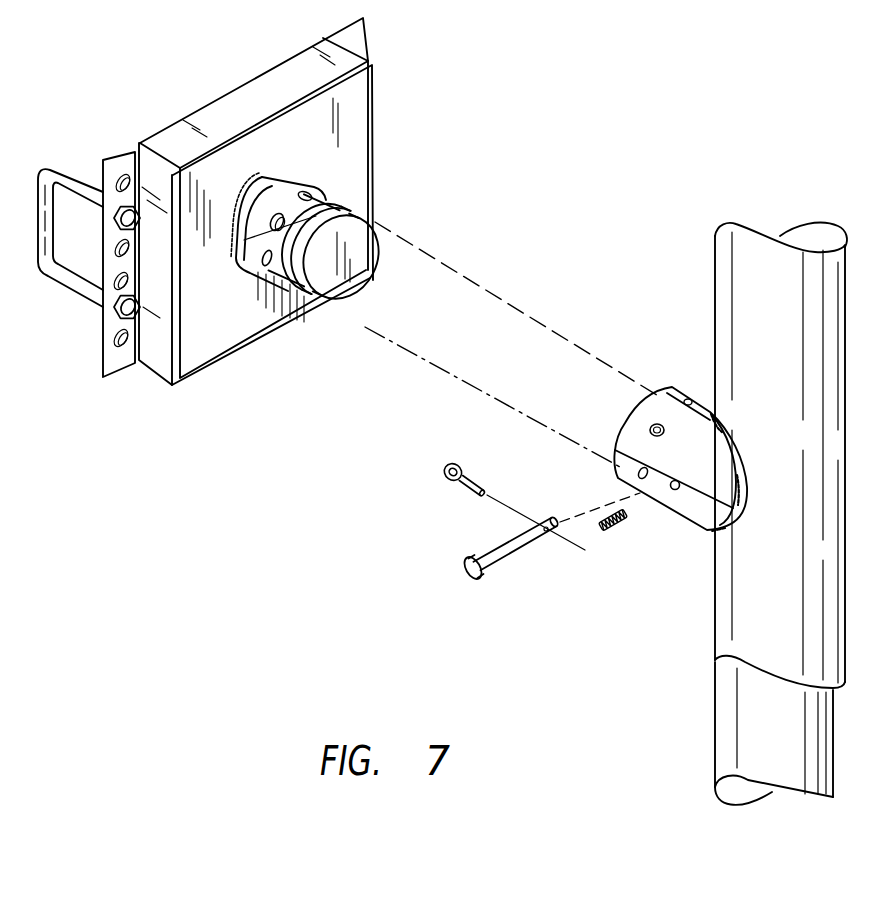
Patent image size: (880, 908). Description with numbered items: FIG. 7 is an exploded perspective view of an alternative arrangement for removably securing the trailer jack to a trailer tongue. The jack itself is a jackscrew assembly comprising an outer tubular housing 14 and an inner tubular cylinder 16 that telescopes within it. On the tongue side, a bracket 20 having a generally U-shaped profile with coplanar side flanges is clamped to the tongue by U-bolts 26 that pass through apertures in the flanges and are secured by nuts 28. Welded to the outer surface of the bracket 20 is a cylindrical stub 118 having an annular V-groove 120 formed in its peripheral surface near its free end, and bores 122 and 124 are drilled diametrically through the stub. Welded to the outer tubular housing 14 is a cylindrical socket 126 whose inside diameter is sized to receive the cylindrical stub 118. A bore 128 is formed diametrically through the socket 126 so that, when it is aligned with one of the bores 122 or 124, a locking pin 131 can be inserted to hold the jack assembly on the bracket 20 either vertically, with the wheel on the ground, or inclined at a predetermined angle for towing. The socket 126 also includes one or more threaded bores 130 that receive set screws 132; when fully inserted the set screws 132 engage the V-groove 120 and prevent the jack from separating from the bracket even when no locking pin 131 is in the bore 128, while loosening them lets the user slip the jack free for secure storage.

The outer tubular housing 14 is at (714, 258).
The inner tubular cylinder 16 is at (725, 714).
The bracket 20 is at (236, 86).
The U-bolt 26 is at (57, 168).
The nut 28 is at (115, 313).
The cylindrical stub 118 is at (307, 185).
The annular V-groove 120 is at (338, 207).
The bore 122 is at (246, 257).
The bore 124 is at (270, 256).
The cylindrical socket 126 is at (648, 405).
The bore 128 is at (652, 428).
The threaded bore 130 is at (677, 497).
The bolt 131 is at (510, 537).
The set screw 132 is at (601, 533).